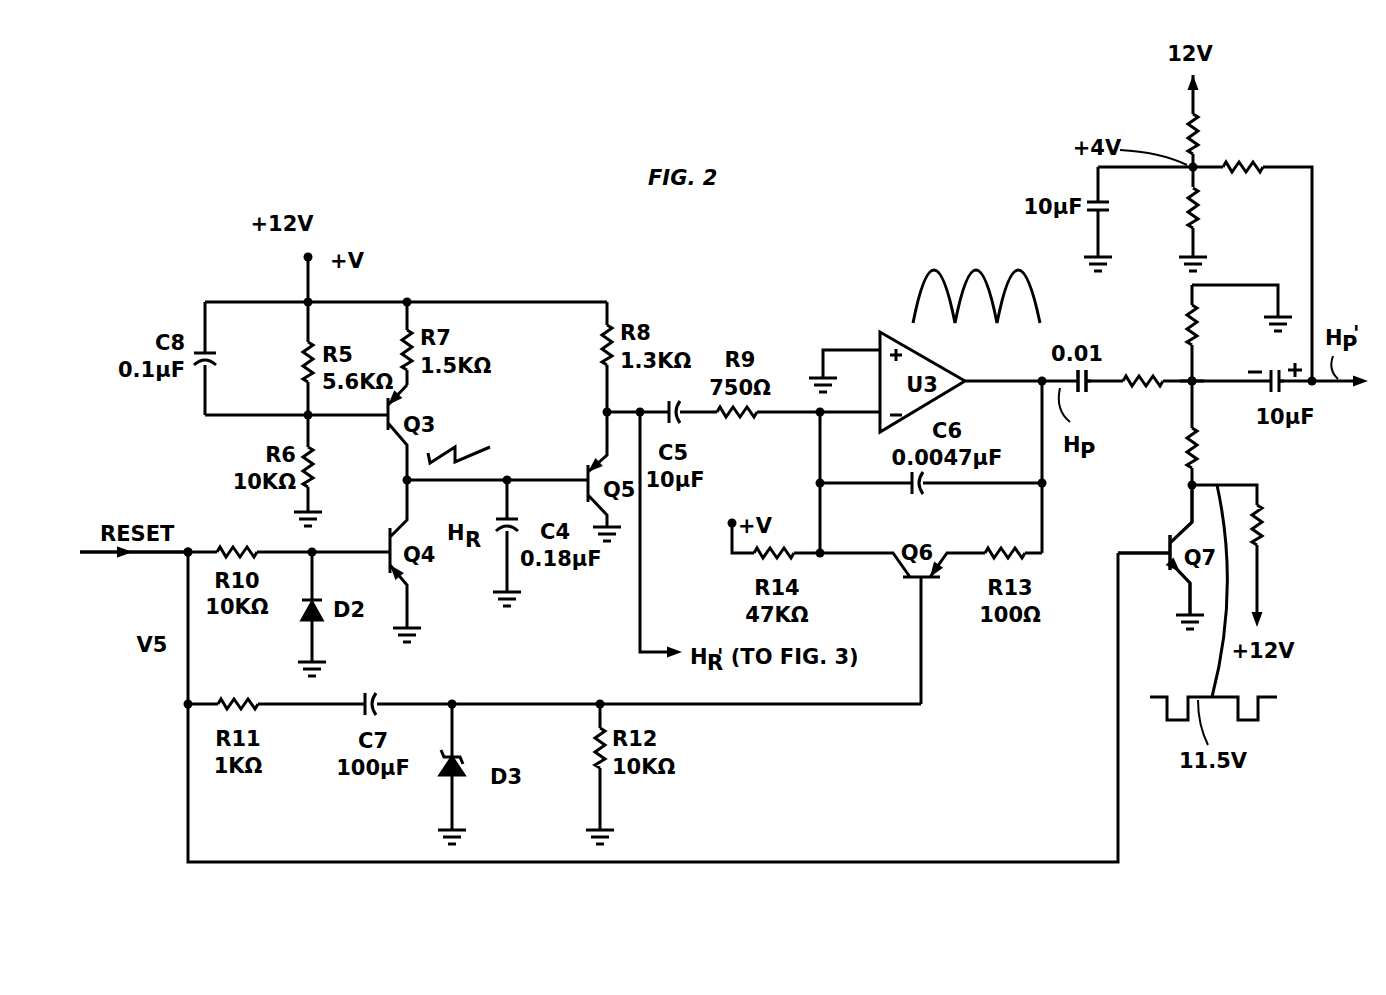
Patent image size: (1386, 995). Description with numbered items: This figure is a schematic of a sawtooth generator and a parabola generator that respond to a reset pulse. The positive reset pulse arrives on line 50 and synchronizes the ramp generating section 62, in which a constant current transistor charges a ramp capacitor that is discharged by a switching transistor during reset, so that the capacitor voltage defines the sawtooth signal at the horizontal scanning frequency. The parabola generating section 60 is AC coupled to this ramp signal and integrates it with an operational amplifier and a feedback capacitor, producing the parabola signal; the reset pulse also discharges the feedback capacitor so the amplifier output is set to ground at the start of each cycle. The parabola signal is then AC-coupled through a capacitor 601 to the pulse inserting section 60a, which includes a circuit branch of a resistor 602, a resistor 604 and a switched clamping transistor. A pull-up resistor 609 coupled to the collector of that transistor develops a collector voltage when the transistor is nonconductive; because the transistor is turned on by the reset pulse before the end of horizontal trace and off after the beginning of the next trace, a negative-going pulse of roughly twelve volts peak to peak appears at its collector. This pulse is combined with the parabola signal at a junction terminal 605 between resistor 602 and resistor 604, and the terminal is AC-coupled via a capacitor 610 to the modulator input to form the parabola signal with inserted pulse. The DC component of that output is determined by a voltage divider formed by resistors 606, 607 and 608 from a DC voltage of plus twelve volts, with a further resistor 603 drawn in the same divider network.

The line 50 is at (162, 553).
The parabola generating section 60 is at (840, 471).
The pulse inserting section 60a is at (1125, 516).
The ramp generating section 62 is at (530, 470).
The capacitor 601 is at (1090, 393).
The resistor 602 is at (1131, 372).
The 6.2K resistor 603 is at (1186, 328).
The resistor 604 is at (1203, 450).
The junction terminal 605 is at (1195, 388).
The resistor 606 is at (1247, 165).
The resistor 607 is at (1200, 215).
The resistor 608 is at (1186, 132).
The pull-up resistor 609 is at (1262, 538).
The capacitor 610 is at (1268, 372).